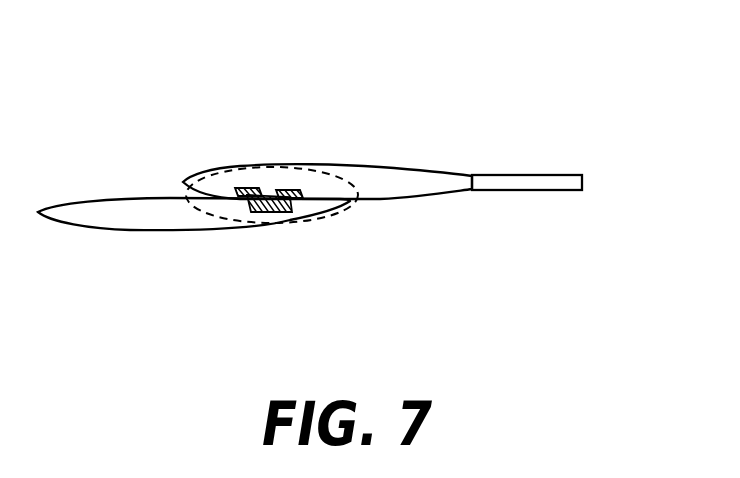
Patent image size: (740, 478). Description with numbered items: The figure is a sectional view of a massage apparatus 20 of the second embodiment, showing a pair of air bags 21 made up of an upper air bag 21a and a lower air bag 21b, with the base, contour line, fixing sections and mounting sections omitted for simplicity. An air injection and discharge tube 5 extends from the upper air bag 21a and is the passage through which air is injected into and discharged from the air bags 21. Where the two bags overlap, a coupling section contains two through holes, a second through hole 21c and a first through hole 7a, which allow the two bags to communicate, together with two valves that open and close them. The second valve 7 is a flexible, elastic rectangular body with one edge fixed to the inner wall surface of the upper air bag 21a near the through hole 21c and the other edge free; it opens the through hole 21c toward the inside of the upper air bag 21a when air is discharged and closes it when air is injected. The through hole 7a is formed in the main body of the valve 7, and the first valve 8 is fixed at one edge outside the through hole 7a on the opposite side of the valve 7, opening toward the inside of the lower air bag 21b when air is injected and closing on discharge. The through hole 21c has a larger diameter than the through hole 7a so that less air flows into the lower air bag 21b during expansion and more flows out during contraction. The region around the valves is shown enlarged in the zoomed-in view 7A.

The cutting assembly 20 is at (268, 35).
The pair of air bags 21 is at (183, 161).
The upper air bag 21a is at (372, 176).
The lower air bag 21b is at (98, 211).
The second through hole 21c is at (233, 219).
The air injection and discharge tube 5 is at (487, 180).
The second valve 7 is at (236, 170).
The first through hole 7a is at (267, 175).
The pivot tip 7A is at (346, 203).
The first valve 8 is at (286, 206).